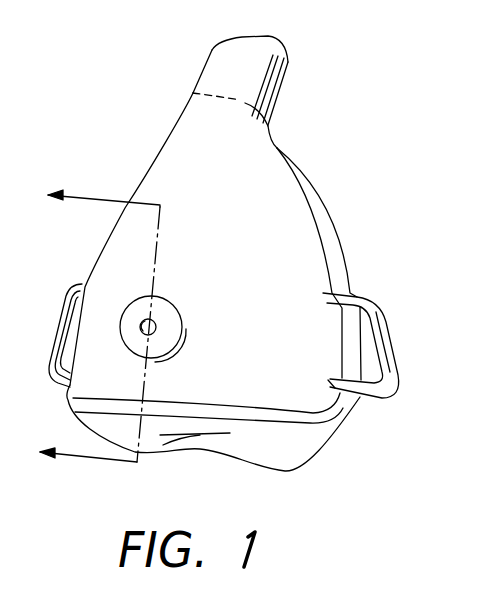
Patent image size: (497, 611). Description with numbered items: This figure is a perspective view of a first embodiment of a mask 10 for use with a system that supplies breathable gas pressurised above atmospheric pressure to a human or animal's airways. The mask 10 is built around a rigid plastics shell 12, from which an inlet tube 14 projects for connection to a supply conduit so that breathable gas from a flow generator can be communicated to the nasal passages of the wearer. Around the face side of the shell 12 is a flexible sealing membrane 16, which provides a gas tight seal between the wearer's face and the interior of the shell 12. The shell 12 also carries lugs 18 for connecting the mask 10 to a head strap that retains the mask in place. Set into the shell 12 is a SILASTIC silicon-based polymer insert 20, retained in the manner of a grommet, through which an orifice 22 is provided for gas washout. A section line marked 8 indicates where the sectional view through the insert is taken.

The section line 8- 8 is at (95, 338).
The mask 10 is at (343, 157).
The rigid plastics shell 12 is at (313, 276).
The inlet tube 14 is at (252, 78).
The flexible sealing membrane 16 is at (300, 448).
The lugs 18 is at (375, 331).
The insert 20 is at (172, 297).
The orifice 22 is at (150, 327).